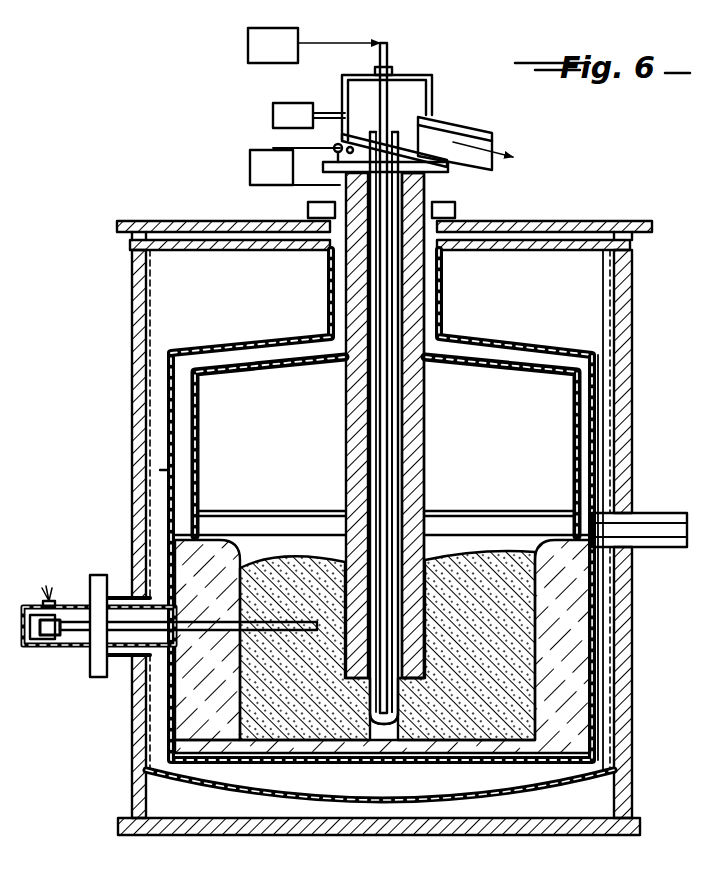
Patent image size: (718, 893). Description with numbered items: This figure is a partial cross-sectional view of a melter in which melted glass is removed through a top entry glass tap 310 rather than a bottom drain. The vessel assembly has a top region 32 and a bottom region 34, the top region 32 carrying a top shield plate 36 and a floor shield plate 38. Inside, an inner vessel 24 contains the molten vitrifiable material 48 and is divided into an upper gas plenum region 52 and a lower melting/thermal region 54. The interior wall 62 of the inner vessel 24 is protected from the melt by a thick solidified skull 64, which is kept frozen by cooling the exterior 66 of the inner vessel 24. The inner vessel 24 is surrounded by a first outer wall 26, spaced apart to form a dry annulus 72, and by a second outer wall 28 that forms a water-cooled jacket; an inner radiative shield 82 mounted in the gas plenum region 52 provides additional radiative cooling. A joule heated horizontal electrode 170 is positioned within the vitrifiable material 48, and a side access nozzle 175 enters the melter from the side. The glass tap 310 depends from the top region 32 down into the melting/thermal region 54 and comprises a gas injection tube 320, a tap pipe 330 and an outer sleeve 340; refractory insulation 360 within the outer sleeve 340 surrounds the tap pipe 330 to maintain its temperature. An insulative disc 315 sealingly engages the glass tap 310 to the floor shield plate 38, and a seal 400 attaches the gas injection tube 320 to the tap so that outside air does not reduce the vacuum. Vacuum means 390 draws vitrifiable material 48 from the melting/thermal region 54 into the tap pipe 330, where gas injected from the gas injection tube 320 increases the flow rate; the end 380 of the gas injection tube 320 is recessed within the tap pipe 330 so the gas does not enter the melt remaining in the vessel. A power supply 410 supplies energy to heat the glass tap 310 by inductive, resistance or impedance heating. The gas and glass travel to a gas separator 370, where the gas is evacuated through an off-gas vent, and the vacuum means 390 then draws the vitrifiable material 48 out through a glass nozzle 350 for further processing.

The top entry glass tap 310 is at (224, 68).
The seal 400 is at (390, 62).
The gas separator 370 is at (410, 92).
The glass nozzle 350 is at (465, 125).
The vacuum means 390 is at (340, 108).
The power supply 410 is at (250, 155).
The insulative disc 315 is at (456, 210).
The floor shield plate 38 is at (590, 220).
The top shield plate 36 is at (145, 268).
The top region 32 is at (632, 272).
The bottom region 34 is at (638, 820).
The tap pipe 330 is at (370, 268).
The gas injection tube 320 is at (425, 270).
The outer sleeve 340 is at (345, 297).
The refractory insulation 360 is at (400, 298).
The first outer wall 26 is at (183, 430).
The inner radiative shield 82 is at (190, 388).
The second outer wall 28 is at (162, 470).
The gas plenum region 52 is at (503, 451).
The vitrifiable material 48 is at (300, 565).
The melting/thermal region 54 is at (482, 598).
The inner vessel 24 is at (172, 553).
The skull 64 is at (582, 684).
The exterior of inner vessel 66 is at (598, 616).
The interior wall 62 is at (584, 646).
The dry annulus 72 is at (165, 746).
The joule heated horizontal electrode 170 is at (80, 607).
The side access nozzle 175 is at (650, 548).
The end of gas injection tube 380 is at (386, 726).